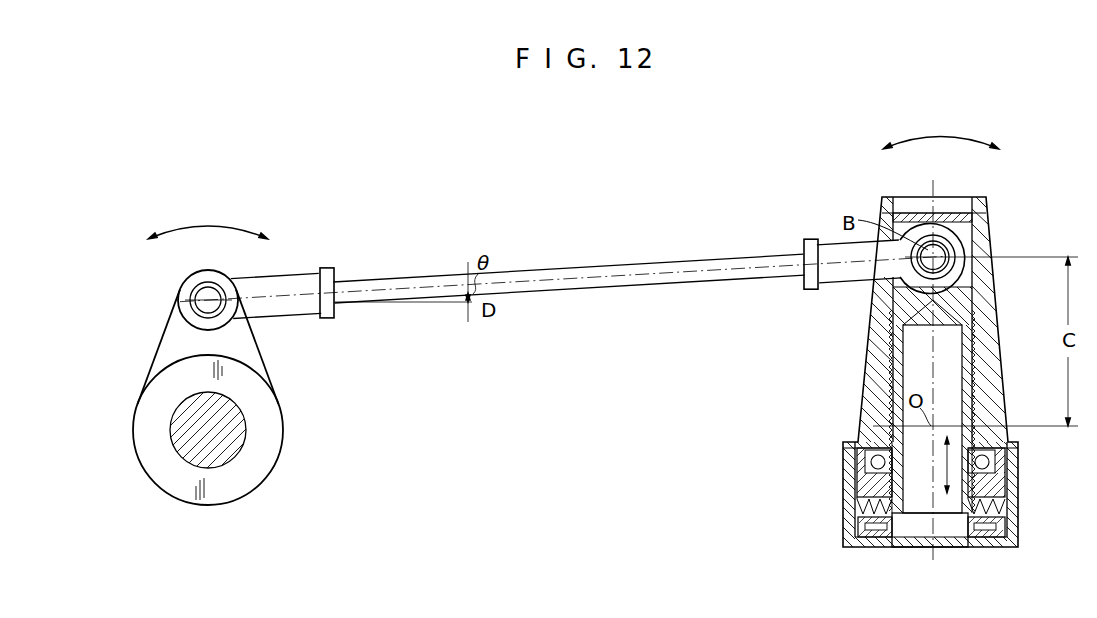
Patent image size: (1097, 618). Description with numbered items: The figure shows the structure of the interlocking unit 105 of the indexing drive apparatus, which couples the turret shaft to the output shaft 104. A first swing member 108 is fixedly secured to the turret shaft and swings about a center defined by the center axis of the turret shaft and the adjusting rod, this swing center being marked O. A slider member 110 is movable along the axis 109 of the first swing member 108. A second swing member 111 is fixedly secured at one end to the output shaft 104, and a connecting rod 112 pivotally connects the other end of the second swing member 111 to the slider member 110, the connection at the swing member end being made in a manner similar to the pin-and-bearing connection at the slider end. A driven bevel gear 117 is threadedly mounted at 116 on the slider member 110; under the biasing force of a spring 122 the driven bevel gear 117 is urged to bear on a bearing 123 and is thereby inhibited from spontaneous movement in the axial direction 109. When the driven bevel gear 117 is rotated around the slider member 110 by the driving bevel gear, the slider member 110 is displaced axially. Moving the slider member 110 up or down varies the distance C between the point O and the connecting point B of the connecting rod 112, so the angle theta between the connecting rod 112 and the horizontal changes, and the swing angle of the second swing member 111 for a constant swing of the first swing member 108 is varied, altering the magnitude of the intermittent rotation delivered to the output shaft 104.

The output shaft 104 is at (238, 430).
The interlocking unit 105 is at (571, 247).
The first swing member 108 is at (980, 210).
The axis of the first swing member 109 is at (937, 188).
The slider member 110 is at (902, 380).
The second swing member 111 is at (248, 350).
The connecting rod 112 is at (660, 272).
The threaded mounting 116 is at (910, 485).
The driven bevel gear 117 is at (863, 480).
The spring 122 is at (857, 513).
The bearing 123 is at (992, 453).